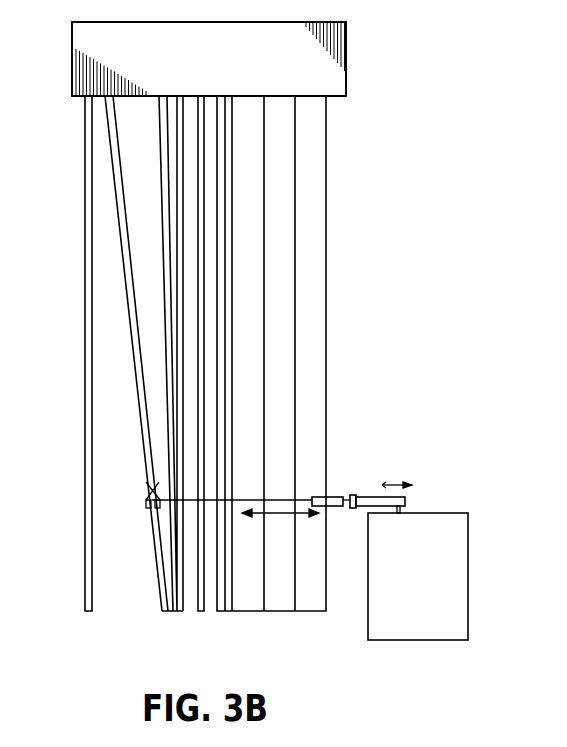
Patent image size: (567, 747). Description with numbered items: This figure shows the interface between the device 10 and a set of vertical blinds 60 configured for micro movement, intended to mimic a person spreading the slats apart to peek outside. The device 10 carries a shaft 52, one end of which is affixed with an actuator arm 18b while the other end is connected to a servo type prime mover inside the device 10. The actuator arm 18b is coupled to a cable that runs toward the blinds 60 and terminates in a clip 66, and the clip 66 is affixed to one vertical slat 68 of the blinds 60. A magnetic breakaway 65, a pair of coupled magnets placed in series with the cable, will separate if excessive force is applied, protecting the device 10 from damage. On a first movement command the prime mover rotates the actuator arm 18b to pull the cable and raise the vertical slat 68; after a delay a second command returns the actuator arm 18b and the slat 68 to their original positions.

The blinds 60 is at (379, 81).
The vertical slat 68 is at (125, 265).
The clip 66 is at (143, 503).
The magnetic breakaway 65 is at (333, 498).
The actuator arm 18b is at (372, 499).
The shaft 52 is at (412, 507).
The device 10 is at (449, 508).